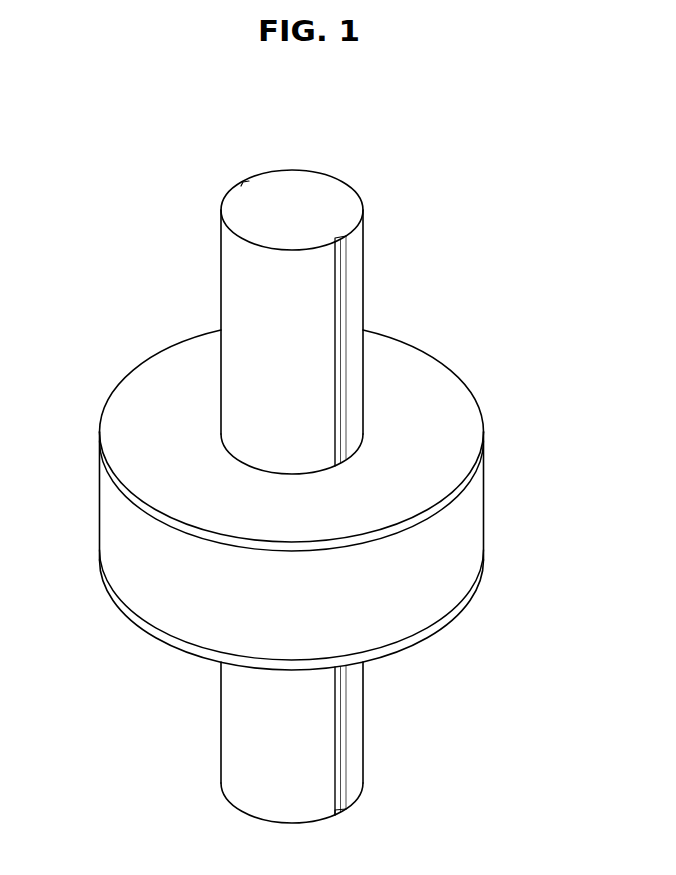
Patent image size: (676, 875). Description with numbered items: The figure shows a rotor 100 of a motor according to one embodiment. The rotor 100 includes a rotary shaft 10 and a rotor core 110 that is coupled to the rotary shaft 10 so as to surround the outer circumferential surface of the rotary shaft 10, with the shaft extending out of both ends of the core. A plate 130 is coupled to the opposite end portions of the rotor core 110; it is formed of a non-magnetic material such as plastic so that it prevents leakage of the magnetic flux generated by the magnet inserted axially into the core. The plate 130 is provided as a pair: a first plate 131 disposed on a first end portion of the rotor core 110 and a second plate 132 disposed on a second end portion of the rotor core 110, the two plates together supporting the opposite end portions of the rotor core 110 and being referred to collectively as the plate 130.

The rotary shaft 10 is at (347, 195).
The rotor 100 is at (308, 492).
The rotor core 110 is at (120, 541).
The plate 130 is at (349, 551).
The first plate 131 is at (458, 495).
The second plate 132 is at (324, 610).